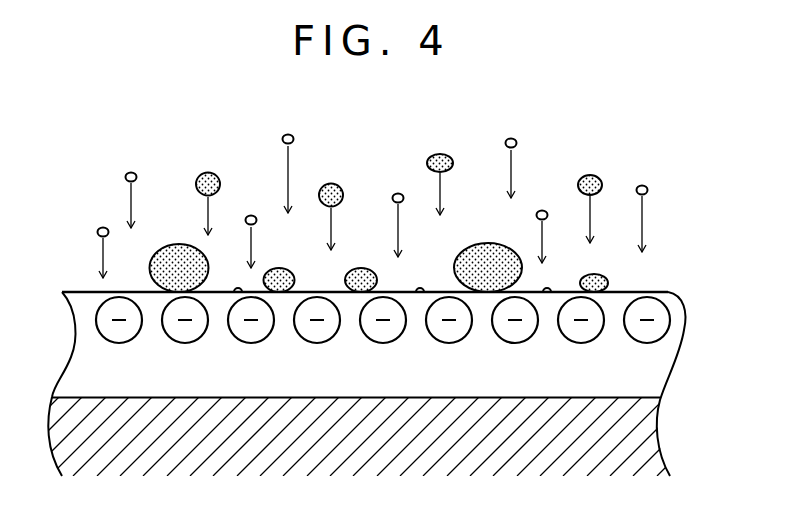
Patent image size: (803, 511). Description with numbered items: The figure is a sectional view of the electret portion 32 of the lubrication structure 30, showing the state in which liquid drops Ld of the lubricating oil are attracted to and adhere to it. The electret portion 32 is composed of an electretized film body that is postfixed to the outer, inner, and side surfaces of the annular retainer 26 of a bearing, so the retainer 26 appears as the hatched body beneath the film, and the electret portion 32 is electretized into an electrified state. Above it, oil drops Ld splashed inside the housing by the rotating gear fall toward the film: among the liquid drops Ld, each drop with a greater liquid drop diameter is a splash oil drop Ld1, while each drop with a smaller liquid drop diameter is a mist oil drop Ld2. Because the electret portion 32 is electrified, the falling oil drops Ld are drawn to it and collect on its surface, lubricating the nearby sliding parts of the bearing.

The retainer 26 is at (619, 387).
The electret portion 32 is at (653, 292).
The lubrication structure 30 is at (405, 280).
The liquid drops Ld is at (387, 181).
The splash oil drop Ld1 is at (590, 172).
The mist oil drop Ld2 is at (517, 140).